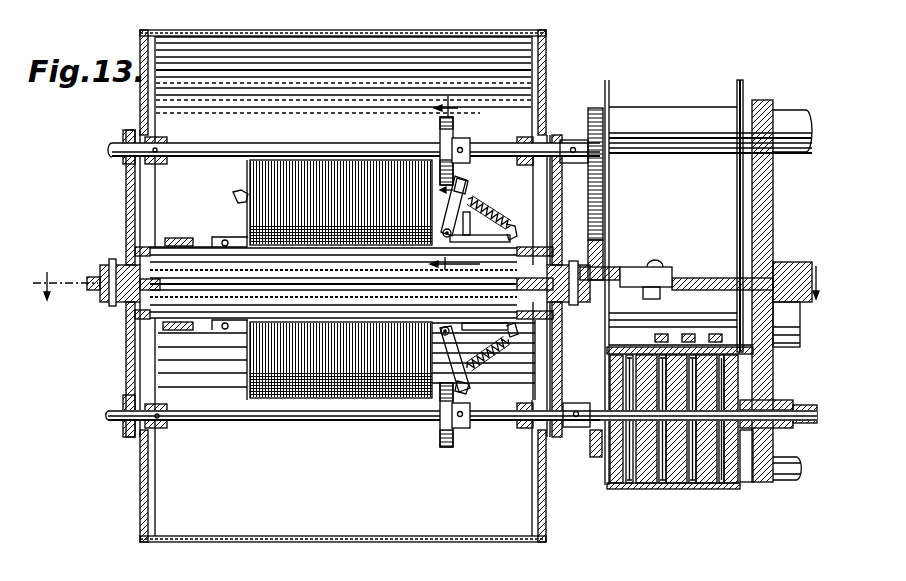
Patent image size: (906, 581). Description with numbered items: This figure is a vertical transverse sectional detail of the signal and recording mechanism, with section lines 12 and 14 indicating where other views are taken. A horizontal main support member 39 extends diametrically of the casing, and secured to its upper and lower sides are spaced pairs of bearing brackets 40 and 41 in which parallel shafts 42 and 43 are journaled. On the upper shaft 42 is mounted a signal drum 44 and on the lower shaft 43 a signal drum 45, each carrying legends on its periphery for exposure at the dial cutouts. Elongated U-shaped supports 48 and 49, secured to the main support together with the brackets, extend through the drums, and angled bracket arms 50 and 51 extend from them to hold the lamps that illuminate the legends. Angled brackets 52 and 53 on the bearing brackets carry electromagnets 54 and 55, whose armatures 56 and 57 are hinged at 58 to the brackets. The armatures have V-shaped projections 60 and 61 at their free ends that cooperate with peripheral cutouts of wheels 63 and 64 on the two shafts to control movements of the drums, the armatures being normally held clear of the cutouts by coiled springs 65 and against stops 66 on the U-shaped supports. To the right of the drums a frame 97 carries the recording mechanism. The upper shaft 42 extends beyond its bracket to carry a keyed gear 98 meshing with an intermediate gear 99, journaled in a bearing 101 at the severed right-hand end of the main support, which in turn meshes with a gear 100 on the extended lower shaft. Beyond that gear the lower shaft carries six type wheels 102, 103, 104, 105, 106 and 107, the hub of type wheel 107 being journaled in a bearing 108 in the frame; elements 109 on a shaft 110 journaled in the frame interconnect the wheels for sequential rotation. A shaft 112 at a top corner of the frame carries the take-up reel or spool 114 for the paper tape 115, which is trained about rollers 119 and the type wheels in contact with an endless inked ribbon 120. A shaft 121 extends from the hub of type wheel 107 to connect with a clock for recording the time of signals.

The section line 12- 12 is at (430, 295).
The section line 14- 14 is at (432, 116).
The main support member 39 is at (789, 275).
The bearing brackets 40 is at (126, 205).
The bearing brackets 41 is at (126, 362).
The upper shaft 42 is at (244, 150).
The lower shaft 43 is at (229, 421).
The signal drum 44 is at (349, 30).
The signal drum 45 is at (349, 543).
The U-shaped support 48 is at (135, 250).
The U-shaped support 49 is at (135, 314).
The angled bracket arm 50 is at (172, 238).
The angled bracket arm 51 is at (193, 330).
The angled bracket 52 is at (244, 229).
The angled bracket 53 is at (238, 372).
The electromagnet 54 is at (337, 160).
The electromagnet 55 is at (340, 400).
The armature 56 is at (470, 199).
The armature 57 is at (471, 378).
The hinge 58 is at (480, 227).
The V-shaped projection 60 is at (468, 186).
The V-shaped projection 61 is at (470, 389).
The wheel 63 is at (452, 127).
The wheel 64 is at (455, 437).
The coiled spring 65 is at (563, 338).
The stop 66 is at (491, 214).
The frame 97 is at (760, 100).
The gear 98 is at (592, 108).
The intermediate gear 99 is at (588, 256).
The gear 100 is at (590, 440).
The bearing 101 is at (640, 265).
The type wheel 102 is at (618, 486).
The type wheel 103 is at (631, 486).
The type wheel 104 is at (655, 486).
The type wheel 105 is at (676, 486).
The type wheel 106 is at (705, 486).
The type wheel 107 is at (729, 486).
The bearing 108 is at (782, 426).
The elements 109 is at (714, 334).
The shaft 110 is at (773, 358).
The shaft 112 is at (814, 130).
The reel or spool 114 is at (737, 88).
The paper tape 115 is at (706, 527).
The rollers 119 is at (660, 335).
The inked ribbon 120 is at (718, 318).
The shaft 121 is at (798, 456).